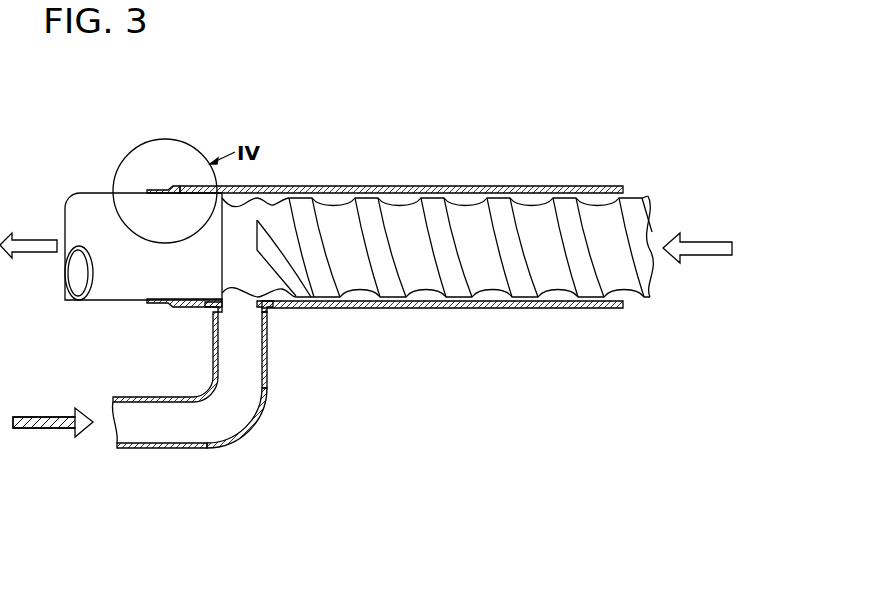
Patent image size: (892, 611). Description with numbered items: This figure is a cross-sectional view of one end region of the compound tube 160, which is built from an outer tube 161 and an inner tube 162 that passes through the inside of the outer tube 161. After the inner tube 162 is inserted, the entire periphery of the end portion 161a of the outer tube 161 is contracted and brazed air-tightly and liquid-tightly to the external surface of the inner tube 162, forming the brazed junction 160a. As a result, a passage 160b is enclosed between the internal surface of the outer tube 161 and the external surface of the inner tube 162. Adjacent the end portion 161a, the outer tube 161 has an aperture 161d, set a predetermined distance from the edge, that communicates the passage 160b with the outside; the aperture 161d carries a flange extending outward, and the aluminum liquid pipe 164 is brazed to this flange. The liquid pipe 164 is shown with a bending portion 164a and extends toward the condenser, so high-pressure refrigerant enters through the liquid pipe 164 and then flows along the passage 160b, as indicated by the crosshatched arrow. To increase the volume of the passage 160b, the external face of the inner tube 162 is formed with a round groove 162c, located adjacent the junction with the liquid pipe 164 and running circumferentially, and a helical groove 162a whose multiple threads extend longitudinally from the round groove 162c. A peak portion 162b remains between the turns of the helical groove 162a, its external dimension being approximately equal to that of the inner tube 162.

The compound tube 160 is at (401, 194).
The brazed junction 160a is at (113, 196).
The passage 160b is at (500, 195).
The outer tube 161 is at (143, 206).
The end portion of the outer tube 161a is at (147, 203).
The aperture 161d is at (237, 312).
The inner tube 162 is at (421, 201).
The helical groove 162a is at (337, 203).
The peak portion 162b is at (440, 186).
The round groove 162c is at (240, 205).
The liquid pipe 164 is at (232, 412).
The bending portion 164a is at (267, 402).